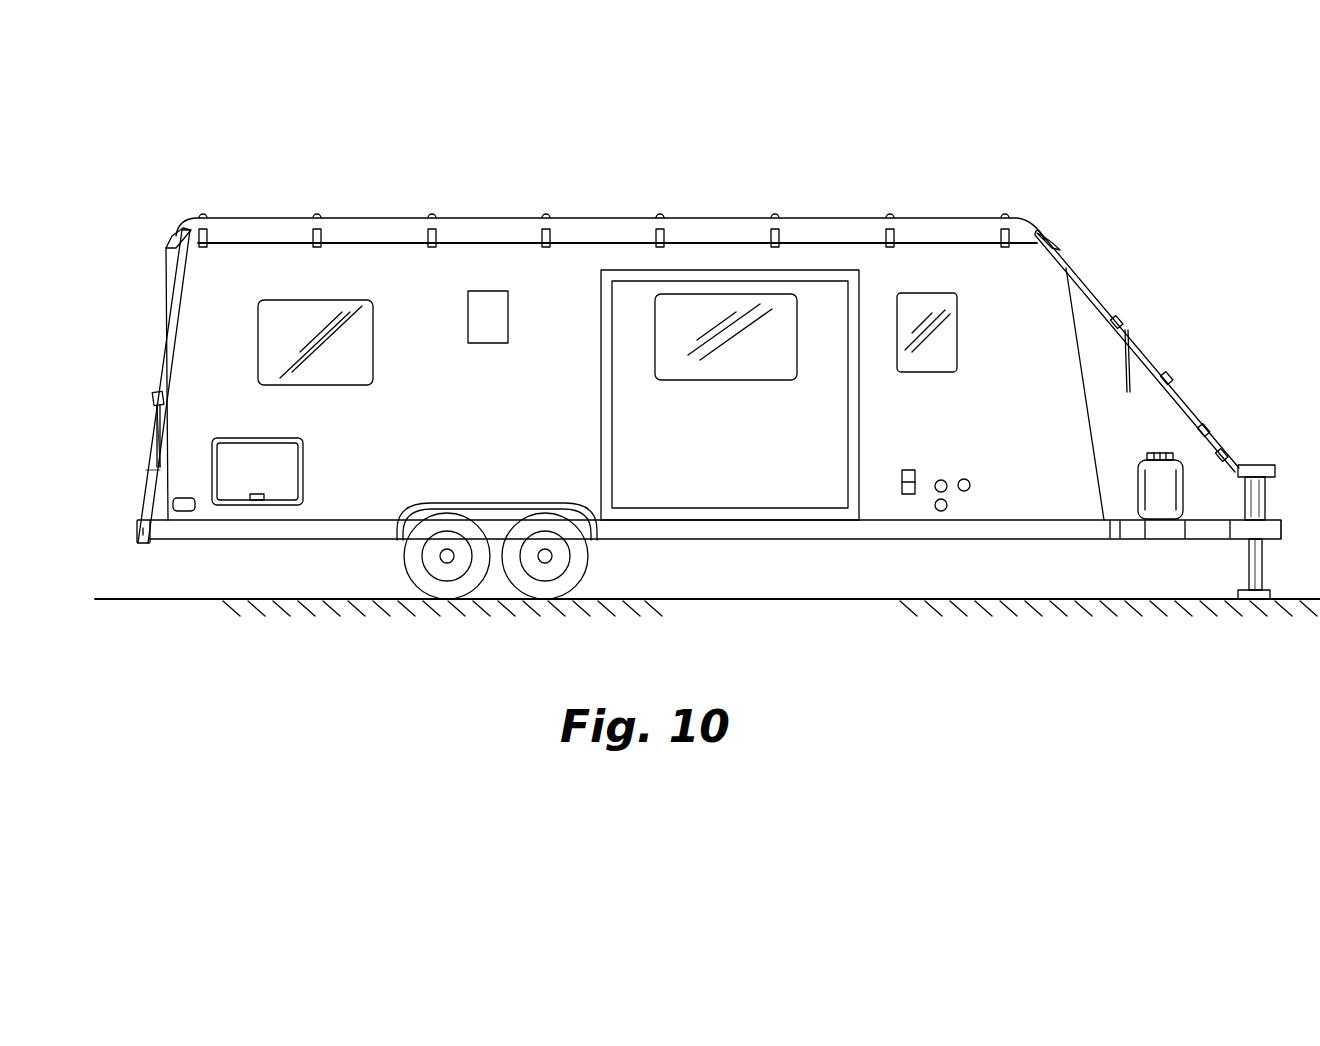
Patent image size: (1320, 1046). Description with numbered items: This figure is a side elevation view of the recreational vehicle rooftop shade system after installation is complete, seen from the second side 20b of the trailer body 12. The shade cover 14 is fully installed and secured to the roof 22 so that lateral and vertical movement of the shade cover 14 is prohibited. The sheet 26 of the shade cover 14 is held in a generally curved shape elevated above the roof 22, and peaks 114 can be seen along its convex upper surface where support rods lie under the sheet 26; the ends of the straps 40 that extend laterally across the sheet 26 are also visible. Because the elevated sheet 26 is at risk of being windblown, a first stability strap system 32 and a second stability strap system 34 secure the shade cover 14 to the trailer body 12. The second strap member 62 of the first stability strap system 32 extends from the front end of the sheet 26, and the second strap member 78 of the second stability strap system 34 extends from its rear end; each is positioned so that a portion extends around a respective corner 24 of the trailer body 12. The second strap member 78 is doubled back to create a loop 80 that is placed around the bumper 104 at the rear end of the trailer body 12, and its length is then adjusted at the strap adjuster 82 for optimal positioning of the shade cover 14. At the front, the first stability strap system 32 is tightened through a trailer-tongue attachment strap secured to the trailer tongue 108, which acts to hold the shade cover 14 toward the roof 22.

The trailer body 12 is at (1097, 520).
The shade cover 14 is at (609, 198).
The second side 20b is at (480, 415).
The roof 22 is at (812, 228).
The corner 24 is at (165, 246).
The sheet 26 is at (367, 218).
The first stability strap system 32 is at (1153, 343).
The second stability strap system 34 is at (163, 406).
The strap 40 is at (540, 233).
The second strap member 62 is at (1088, 289).
The second strap member 78 is at (183, 264).
The loop 80 is at (148, 470).
The strap adjuster 82 is at (152, 394).
The bumper 104 is at (138, 538).
The trailer tongue 108 is at (1282, 527).
The peaks 114 is at (658, 217).